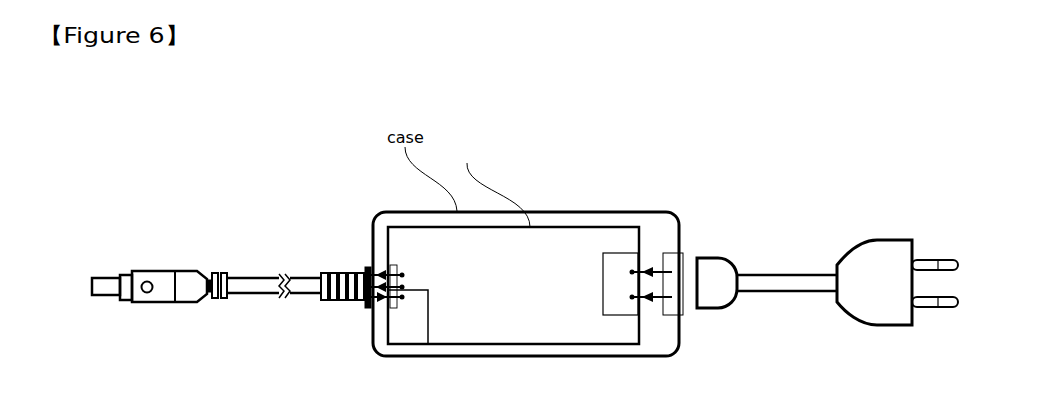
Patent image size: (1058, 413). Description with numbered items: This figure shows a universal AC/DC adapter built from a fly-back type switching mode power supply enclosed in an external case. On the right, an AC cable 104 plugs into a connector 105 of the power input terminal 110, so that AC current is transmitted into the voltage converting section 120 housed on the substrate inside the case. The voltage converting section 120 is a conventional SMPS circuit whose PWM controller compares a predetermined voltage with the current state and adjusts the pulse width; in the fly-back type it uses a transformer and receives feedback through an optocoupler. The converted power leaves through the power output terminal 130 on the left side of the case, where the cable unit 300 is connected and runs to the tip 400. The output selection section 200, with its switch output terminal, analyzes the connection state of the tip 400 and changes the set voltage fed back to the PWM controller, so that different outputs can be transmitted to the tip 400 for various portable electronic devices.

The AC cable 104 is at (735, 249).
The connector 105 is at (673, 250).
The power input terminal 110 is at (620, 253).
The voltage converting section 120 is at (513, 244).
The power output terminal 130 is at (388, 267).
The output selection section 200 is at (408, 317).
The cable unit 300 is at (262, 284).
The tip 400 is at (160, 270).